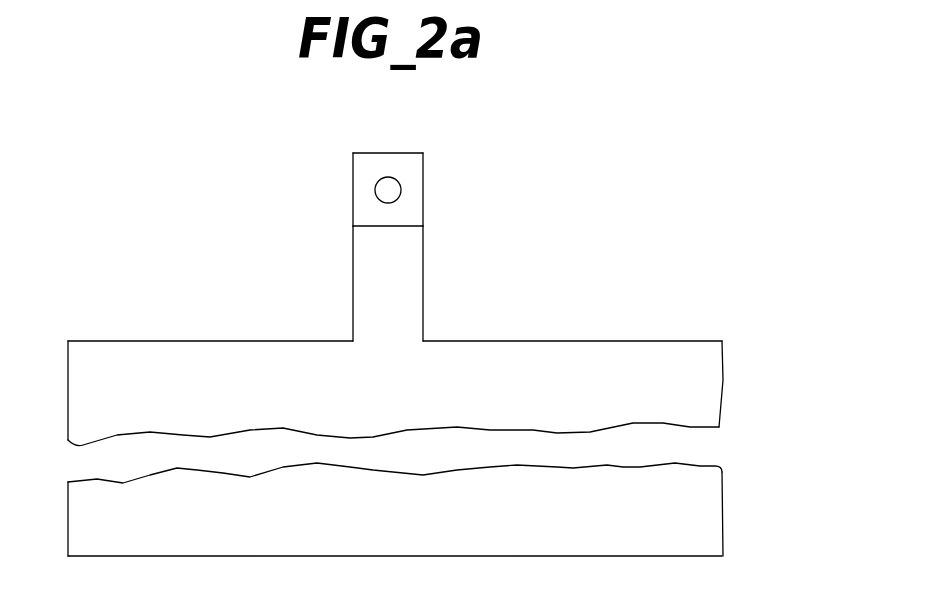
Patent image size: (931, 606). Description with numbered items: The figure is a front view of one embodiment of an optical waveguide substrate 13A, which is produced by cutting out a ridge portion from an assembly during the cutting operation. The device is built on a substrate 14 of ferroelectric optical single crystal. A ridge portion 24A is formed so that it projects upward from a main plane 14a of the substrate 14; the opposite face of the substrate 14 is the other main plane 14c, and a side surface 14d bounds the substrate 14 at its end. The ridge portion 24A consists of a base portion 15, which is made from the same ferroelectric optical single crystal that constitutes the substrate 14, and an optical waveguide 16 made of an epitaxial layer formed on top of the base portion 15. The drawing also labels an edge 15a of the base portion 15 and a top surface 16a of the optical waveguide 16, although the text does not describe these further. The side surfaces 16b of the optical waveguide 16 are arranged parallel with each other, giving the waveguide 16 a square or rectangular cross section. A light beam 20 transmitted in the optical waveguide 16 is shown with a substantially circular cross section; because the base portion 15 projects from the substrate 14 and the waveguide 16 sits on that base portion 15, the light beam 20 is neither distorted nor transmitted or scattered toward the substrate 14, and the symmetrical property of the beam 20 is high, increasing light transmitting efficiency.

The optical waveguide substrate 13A is at (785, 232).
The ridge portion 24A is at (446, 146).
The optical waveguide 16 is at (415, 190).
The top edge of head 16a is at (403, 153).
The side surfaces of the optical waveguide 16b is at (423, 163).
The light beam 20 is at (393, 193).
The base portion 15 is at (412, 287).
The neck side edge 15a is at (352, 278).
The substrate 14 is at (736, 336).
The main plane of the substrate 14a is at (620, 340).
The other main plane 14c is at (593, 557).
The side surface 14d is at (707, 395).